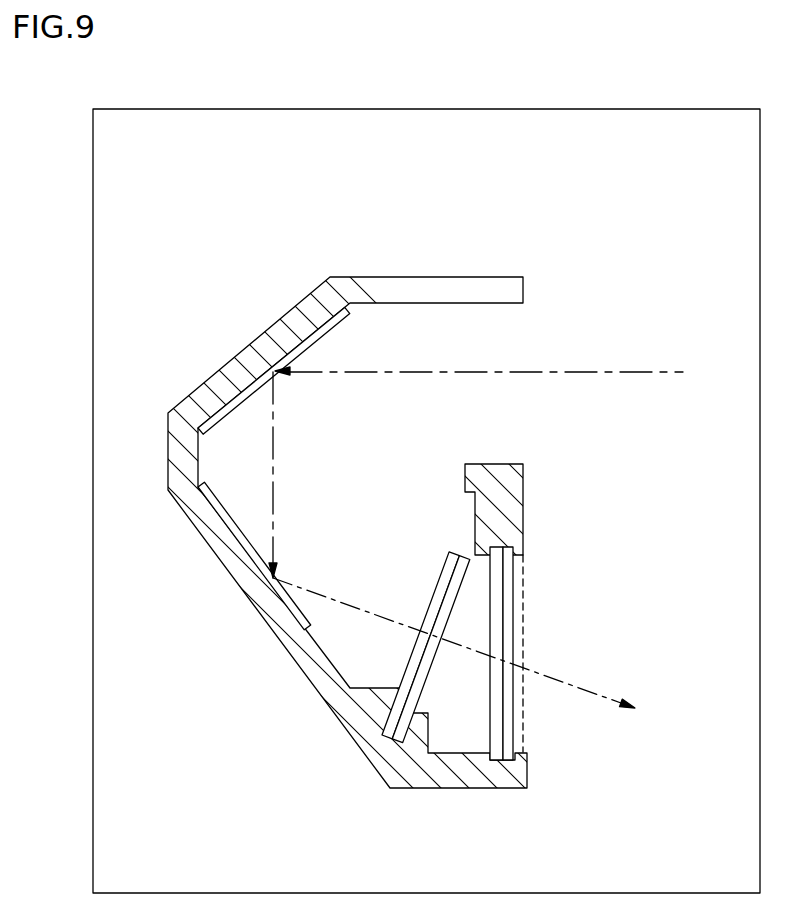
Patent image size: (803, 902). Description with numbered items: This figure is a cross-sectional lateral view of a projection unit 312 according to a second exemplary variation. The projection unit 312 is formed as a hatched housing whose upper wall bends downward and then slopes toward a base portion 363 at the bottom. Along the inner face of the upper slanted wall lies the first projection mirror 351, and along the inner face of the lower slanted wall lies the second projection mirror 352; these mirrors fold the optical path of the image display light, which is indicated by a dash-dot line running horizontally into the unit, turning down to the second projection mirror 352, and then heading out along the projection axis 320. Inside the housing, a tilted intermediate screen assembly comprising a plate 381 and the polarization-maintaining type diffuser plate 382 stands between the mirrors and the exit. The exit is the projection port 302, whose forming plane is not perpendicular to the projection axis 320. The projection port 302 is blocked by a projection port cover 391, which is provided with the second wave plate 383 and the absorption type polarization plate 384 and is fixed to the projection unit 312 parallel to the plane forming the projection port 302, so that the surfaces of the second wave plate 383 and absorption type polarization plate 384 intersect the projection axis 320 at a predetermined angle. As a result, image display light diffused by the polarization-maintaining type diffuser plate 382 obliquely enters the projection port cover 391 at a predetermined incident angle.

The projection unit 312 is at (477, 277).
The first projection mirror 351 is at (336, 318).
The second projection mirror 352 is at (208, 492).
The first optical plate 381 is at (445, 562).
The polarization-maintaining type diffuser plate 382 is at (466, 551).
The second wave plate 383 is at (500, 546).
The absorption type polarization plate 384 is at (507, 546).
The projection port cover 391 is at (605, 622).
The projection port 302 is at (523, 587).
The projection axis 320 is at (545, 679).
The base portion 363 is at (517, 817).